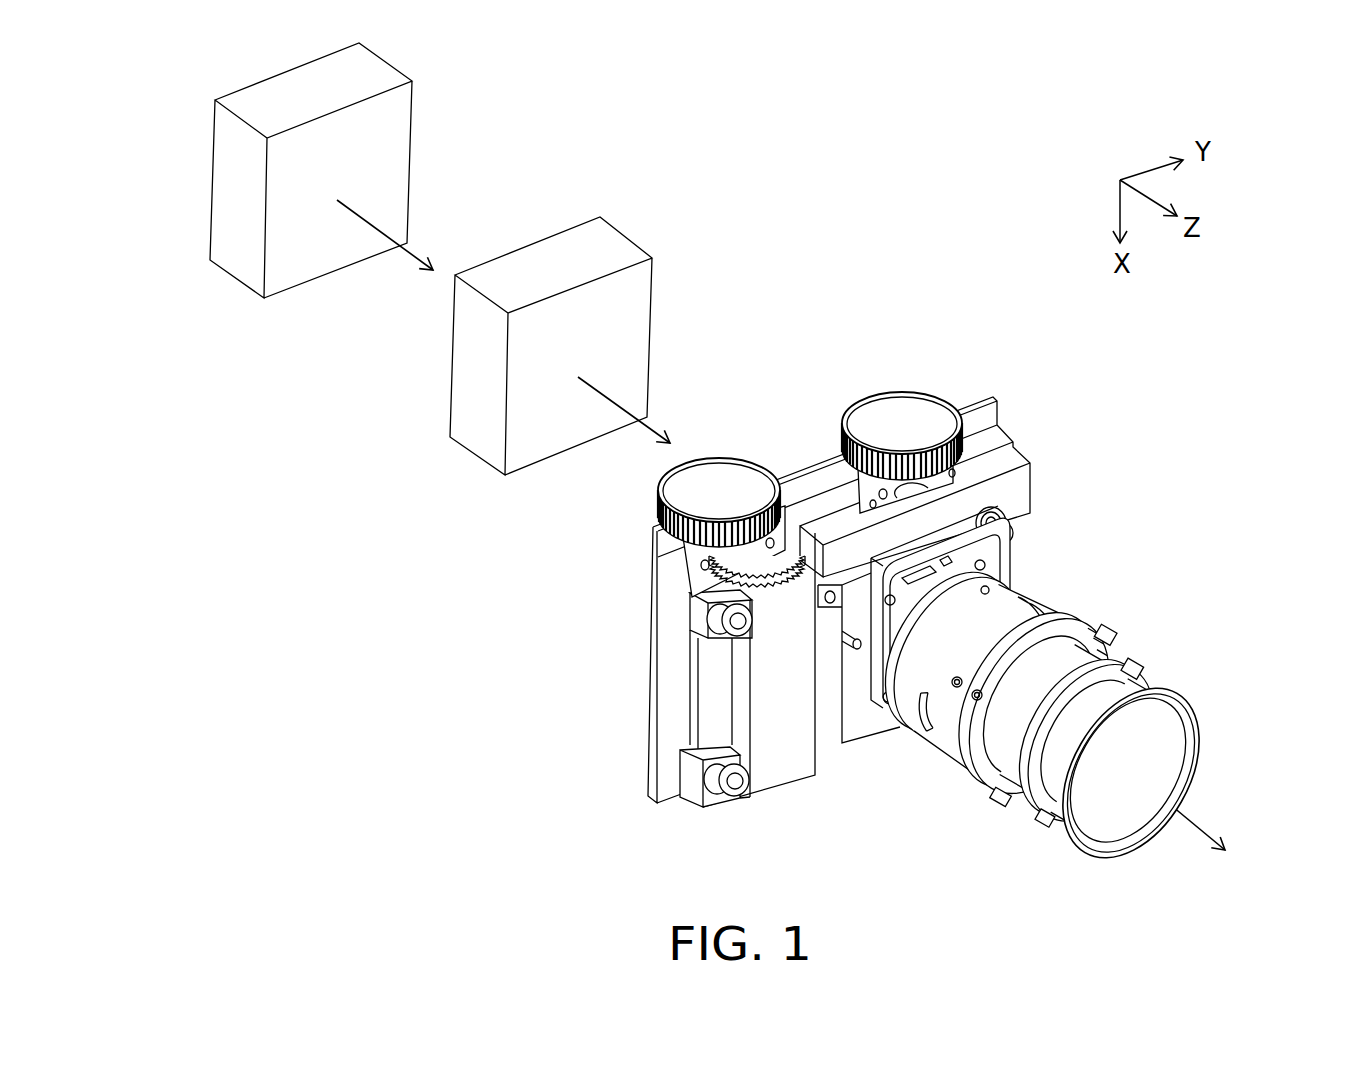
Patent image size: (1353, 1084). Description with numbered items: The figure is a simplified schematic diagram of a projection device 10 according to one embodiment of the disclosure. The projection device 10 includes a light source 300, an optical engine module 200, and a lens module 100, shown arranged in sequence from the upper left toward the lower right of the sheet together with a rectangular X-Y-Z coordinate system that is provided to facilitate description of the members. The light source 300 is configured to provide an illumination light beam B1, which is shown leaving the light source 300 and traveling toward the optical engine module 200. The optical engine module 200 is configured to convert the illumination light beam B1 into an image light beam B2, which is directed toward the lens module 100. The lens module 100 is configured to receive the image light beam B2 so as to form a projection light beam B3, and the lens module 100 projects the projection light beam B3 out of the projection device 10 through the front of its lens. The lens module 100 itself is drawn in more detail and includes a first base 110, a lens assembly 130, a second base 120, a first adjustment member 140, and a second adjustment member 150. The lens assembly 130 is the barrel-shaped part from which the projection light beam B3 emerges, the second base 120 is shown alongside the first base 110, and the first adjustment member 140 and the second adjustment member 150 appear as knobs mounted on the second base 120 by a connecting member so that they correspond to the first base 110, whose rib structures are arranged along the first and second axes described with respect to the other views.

The projection device 10 is at (215, 842).
The lens module 100 is at (588, 812).
The first base 110 is at (782, 770).
The second base 120 is at (652, 660).
The lens assembly 130 is at (1121, 581).
The first adjustment member 140 is at (907, 368).
The second adjustment member 150 is at (725, 434).
The optical engine module 200 is at (475, 457).
The light source 300 is at (233, 277).
The illumination light beam B1 is at (402, 248).
The image light beam B2 is at (642, 423).
The projection light beam B3 is at (1189, 814).